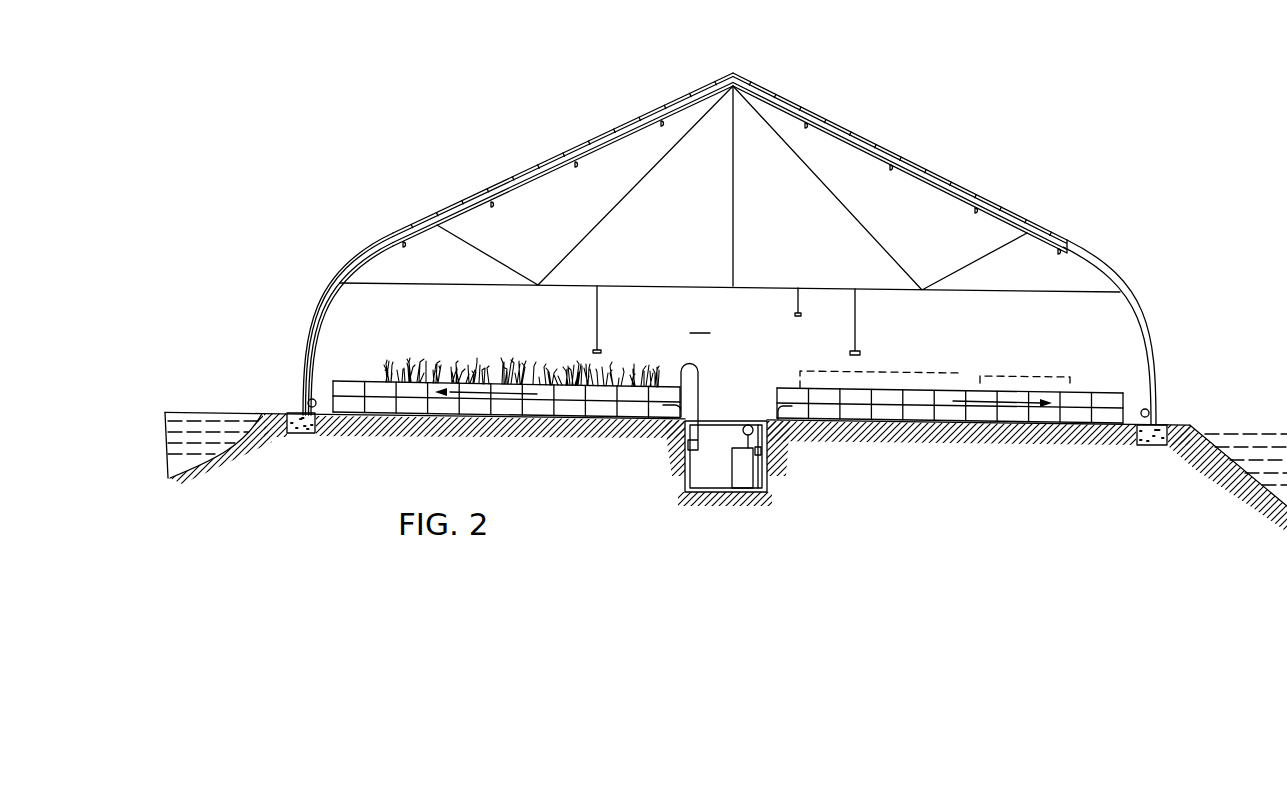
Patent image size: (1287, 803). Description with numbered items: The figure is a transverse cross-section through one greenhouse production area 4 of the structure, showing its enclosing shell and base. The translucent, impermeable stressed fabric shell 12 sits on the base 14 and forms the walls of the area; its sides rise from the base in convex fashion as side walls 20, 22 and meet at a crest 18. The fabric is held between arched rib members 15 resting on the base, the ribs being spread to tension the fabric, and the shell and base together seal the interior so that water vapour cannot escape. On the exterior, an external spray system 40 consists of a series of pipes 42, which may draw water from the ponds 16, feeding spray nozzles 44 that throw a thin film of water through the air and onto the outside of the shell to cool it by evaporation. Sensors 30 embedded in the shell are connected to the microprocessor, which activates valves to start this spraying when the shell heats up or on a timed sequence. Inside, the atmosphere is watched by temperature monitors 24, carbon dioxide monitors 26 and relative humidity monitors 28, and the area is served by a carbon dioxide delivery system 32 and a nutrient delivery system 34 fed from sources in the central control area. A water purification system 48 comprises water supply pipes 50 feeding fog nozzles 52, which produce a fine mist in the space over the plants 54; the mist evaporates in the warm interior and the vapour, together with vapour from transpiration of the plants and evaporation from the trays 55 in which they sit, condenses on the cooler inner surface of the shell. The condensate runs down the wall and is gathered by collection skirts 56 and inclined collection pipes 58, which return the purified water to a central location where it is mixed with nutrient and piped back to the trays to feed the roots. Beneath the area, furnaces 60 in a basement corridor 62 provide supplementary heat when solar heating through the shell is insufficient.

The production area 4 is at (700, 323).
The stressed fabric shell 12 is at (317, 310).
The base 14 is at (470, 432).
The arched rib members 15 is at (322, 331).
The ponds 16 is at (223, 414).
The crest 18 is at (737, 71).
The side wall 20 is at (1155, 340).
The side wall 22 is at (359, 243).
The temperature monitors 24 is at (600, 345).
The carbon dioxide monitors 26 is at (797, 315).
The relative humidity monitors 28 is at (860, 356).
The sensors 30 is at (862, 140).
The carbon dioxide delivery system 32 is at (762, 452).
The nutrient delivery system 34 is at (700, 372).
The external spray system 40 is at (574, 138).
The pipes 42 is at (514, 174).
The spray nozzles 44 is at (440, 205).
The water purification system 48 is at (608, 163).
The water supply pipes 50 is at (410, 243).
The fog nozzles 52 is at (405, 249).
The plants 54 is at (450, 360).
The trays 55 is at (562, 395).
The collection skirts 56 is at (307, 393).
The collection pipes 58 is at (313, 435).
The furnaces 60 is at (733, 478).
The basement corridor 62 is at (707, 457).